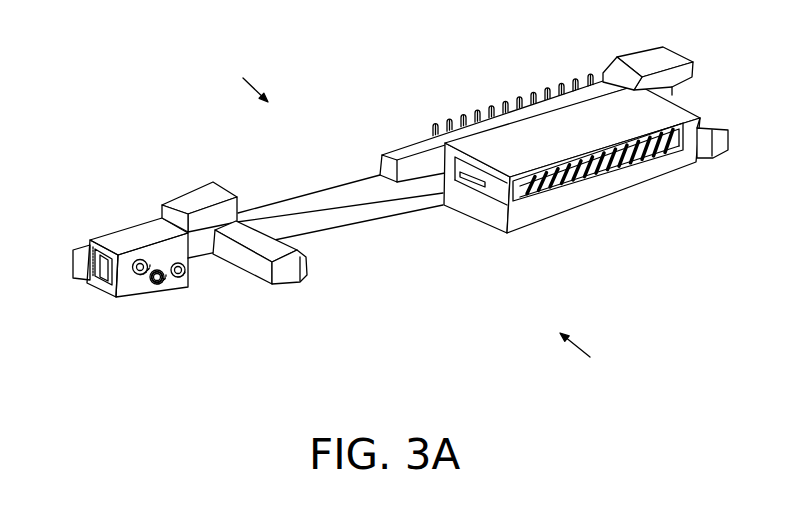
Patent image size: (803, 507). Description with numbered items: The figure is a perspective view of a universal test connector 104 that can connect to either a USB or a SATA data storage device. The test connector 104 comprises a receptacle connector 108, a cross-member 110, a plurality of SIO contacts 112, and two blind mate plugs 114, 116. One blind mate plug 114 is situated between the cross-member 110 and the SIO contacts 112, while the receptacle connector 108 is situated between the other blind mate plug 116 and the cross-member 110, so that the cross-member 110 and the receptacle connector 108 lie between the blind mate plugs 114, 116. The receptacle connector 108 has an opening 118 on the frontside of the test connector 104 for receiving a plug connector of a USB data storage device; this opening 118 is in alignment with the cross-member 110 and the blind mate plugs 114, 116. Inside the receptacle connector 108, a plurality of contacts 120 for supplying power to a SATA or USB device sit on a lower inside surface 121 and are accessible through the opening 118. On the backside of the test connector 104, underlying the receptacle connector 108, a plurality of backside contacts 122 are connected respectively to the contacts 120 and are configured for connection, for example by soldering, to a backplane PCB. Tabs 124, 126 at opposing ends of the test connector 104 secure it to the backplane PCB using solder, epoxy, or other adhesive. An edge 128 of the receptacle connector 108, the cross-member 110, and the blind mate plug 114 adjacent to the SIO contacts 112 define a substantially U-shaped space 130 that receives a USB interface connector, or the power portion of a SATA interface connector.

The universal test connector 104 is at (68, 50).
The receptacle connector 108 is at (580, 145).
The cross-member 110 is at (326, 191).
The SIO contacts 112 is at (171, 298).
The blind mate plug 114 is at (285, 277).
The blind mate plug 116 is at (727, 152).
The opening 118 is at (644, 223).
The contacts 120 is at (547, 198).
The lower inside surface 121 is at (458, 176).
The backside contacts 122 is at (600, 72).
The tab 124 is at (80, 263).
The tab 126 is at (692, 75).
The edge 128 is at (487, 210).
The substantially U-shaped space 130 is at (408, 265).